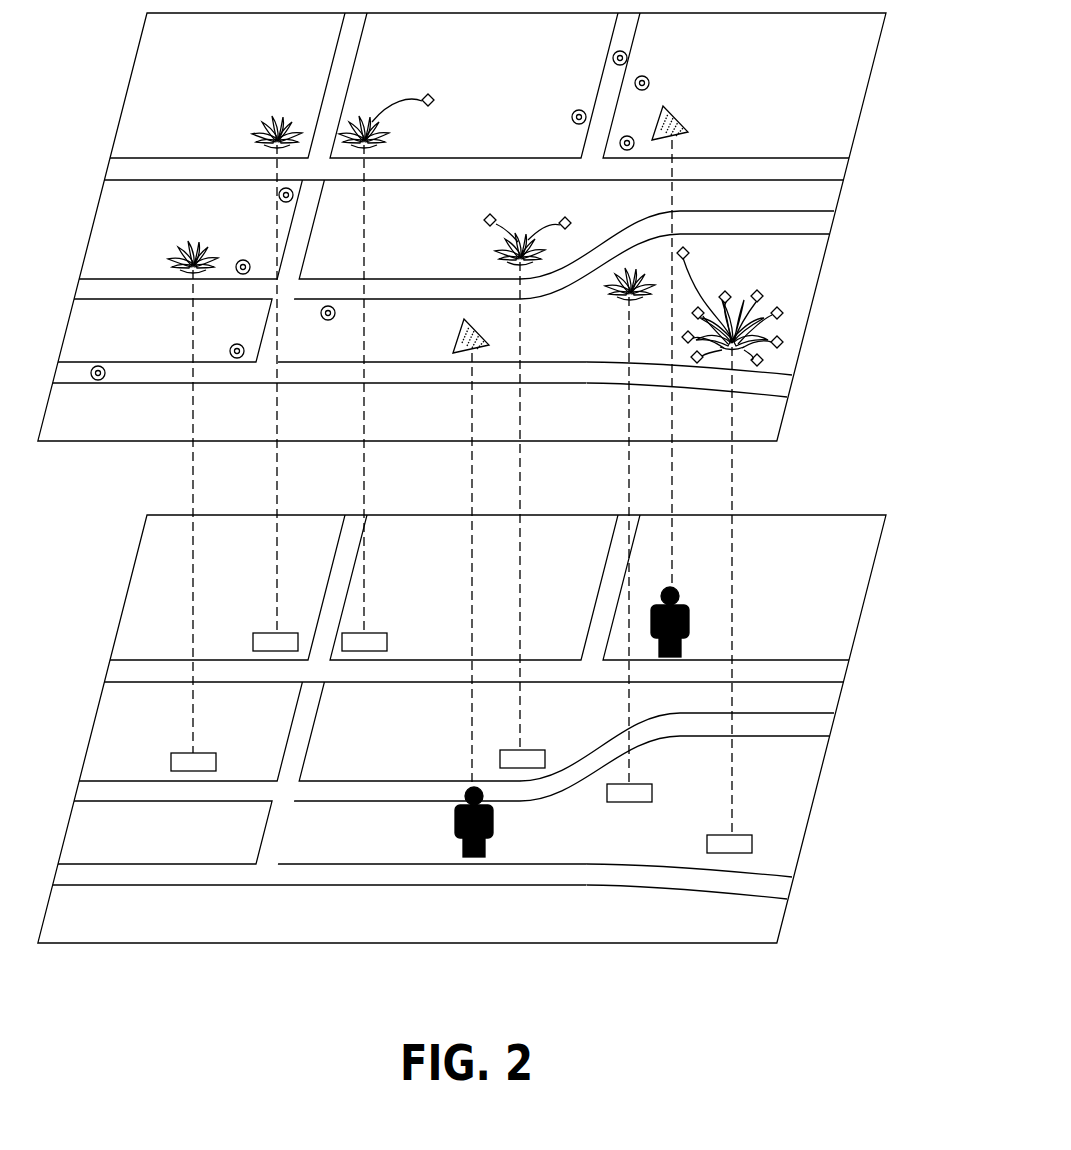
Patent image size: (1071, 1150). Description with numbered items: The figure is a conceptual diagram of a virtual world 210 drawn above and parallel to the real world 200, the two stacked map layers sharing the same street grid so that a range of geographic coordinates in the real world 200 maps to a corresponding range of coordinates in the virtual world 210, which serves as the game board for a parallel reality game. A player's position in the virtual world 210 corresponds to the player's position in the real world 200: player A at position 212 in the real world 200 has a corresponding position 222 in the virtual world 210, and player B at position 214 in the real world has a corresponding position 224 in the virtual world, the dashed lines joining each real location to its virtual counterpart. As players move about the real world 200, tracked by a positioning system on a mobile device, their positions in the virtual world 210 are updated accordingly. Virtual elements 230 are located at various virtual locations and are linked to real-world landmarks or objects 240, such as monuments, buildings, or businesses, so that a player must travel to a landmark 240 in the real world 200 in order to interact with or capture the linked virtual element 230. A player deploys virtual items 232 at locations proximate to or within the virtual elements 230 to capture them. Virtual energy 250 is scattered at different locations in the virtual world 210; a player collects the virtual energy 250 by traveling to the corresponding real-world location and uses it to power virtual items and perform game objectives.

The real world 200 is at (866, 602).
The virtual world 210 is at (858, 134).
The position of player A in the real world 212 is at (455, 826).
The position of player B in the real world 214 is at (690, 612).
The corresponding position of player A in the virtual world 222 is at (490, 345).
The corresponding position of player B in the virtual world 224 is at (690, 133).
The virtual elements 230 is at (275, 124).
The virtual items 232 is at (434, 96).
The real-world landmarks or objects 240 is at (272, 633).
The virtual energy 250 is at (650, 83).